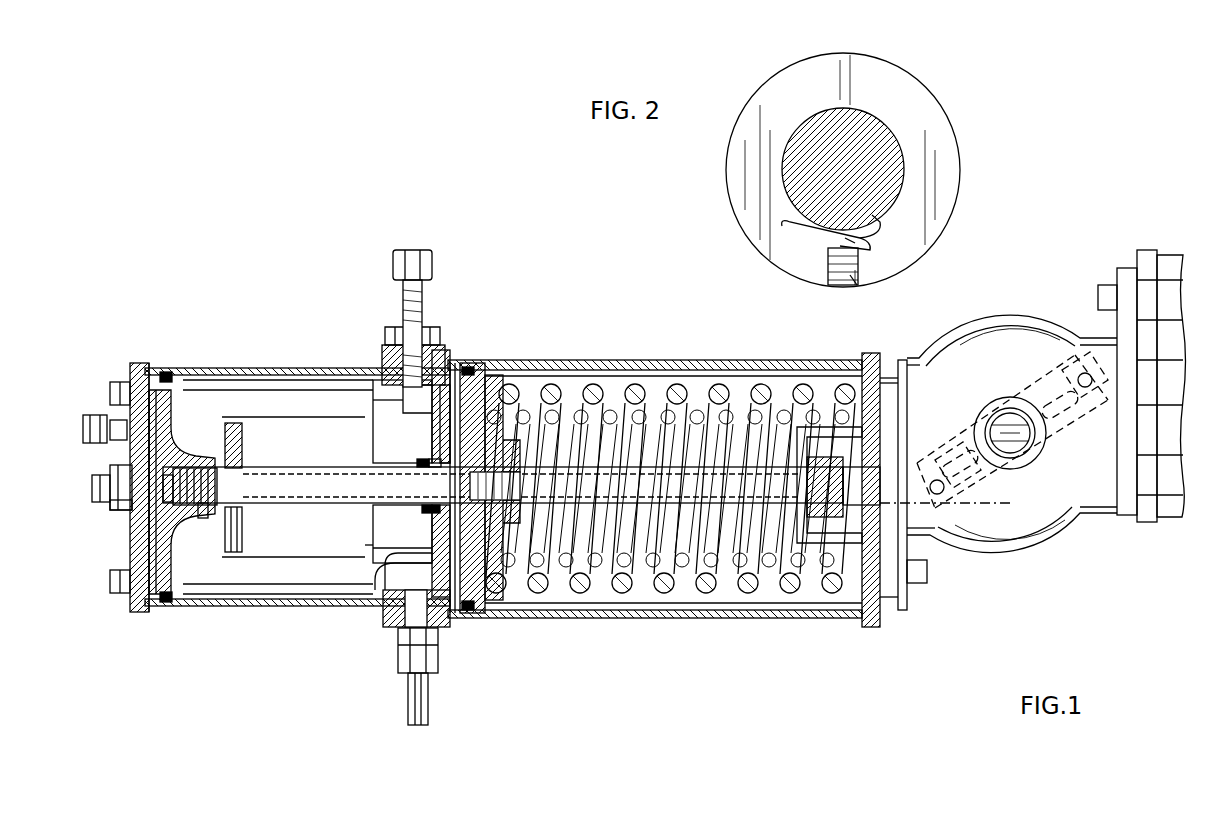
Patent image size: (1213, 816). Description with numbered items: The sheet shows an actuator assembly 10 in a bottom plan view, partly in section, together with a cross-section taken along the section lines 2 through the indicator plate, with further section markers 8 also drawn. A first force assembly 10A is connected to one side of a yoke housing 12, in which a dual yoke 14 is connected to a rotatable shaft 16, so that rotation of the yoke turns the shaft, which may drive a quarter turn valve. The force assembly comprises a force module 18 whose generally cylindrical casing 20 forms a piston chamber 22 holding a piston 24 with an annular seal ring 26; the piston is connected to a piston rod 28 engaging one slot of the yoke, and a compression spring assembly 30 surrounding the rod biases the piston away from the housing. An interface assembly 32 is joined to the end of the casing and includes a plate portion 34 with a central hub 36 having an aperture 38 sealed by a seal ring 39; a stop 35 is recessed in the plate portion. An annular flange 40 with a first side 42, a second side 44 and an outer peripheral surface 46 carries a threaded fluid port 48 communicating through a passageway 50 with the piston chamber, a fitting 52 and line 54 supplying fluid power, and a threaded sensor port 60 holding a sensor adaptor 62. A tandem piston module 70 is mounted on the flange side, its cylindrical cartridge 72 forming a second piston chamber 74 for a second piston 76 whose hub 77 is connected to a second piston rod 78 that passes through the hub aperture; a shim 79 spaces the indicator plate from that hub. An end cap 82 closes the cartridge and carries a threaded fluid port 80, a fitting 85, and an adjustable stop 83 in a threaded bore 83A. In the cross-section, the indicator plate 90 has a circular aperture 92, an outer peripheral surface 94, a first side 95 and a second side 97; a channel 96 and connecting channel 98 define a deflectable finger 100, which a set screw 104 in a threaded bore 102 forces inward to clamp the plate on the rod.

In FIG. 1, the actuator assembly 10 is at (430, 228).
In FIG. 1, the first force assembly 10A is at (557, 275).
In FIG. 1, the yoke housing 12 is at (1000, 553).
In FIG. 1, the dual yoke 14 is at (1050, 385).
In FIG. 1, the rotatable shaft 16 is at (1012, 440).
In FIG. 1, the force module 18 is at (670, 698).
In FIG. 1, the cylindrical casing 20 is at (690, 360).
In FIG. 1, the piston chamber 22 is at (470, 560).
In FIG. 1, the piston 24 is at (480, 400).
In FIG. 1, the annular seal ring 26 is at (468, 368).
In FIG. 1, the piston rod 28 is at (636, 482).
In FIG. 1, the compression spring assembly 30 is at (688, 598).
In FIG. 1, the interface assembly 32 is at (305, 750).
In FIG. 1, the plate portion 34 is at (415, 543).
In FIG. 1, the stop 35 is at (436, 435).
In FIG. 1, the hub 36 is at (420, 510).
In FIG. 1, the aperture 38 is at (415, 465).
In FIG. 1, the seal ring 39 is at (425, 460).
In FIG. 1, the annular flange 40 is at (392, 575).
In FIG. 1, the first side 42 is at (455, 627).
In FIG. 1, the second side 44 is at (388, 350).
In FIG. 1, the outer peripheral surface 46 is at (440, 632).
In FIG. 1, the threaded fluid port 48 is at (418, 602).
In FIG. 1, the passageway 50 is at (390, 590).
In FIG. 1, the fitting 52 is at (405, 648).
In FIG. 1, the line 54 is at (415, 728).
In FIG. 1, the threaded sensor port 60 is at (450, 392).
In FIG. 1, the sensor adaptor 62 is at (340, 250).
In FIG. 1, the tandem piston module 70 is at (220, 255).
In FIG. 1, the cylindrical cartridge 72 is at (296, 367).
In FIG. 1, the second piston chamber 74 is at (163, 568).
In FIG. 1, the second piston 76 is at (178, 560).
In FIG. 1, the hub 77 is at (213, 470).
In FIG. 1, the second piston rod 78 is at (245, 487).
In FIG. 2, the second piston rod 78 is at (815, 128).
In FIG. 1, the shim 79 is at (170, 600).
In FIG. 1, the threaded fluid port 80 is at (165, 372).
In FIG. 1, the end cap 82 is at (140, 600).
In FIG. 1, the adjustable stop 83 is at (145, 490).
In FIG. 1, the threaded bore 83A is at (108, 505).
In FIG. 1, the fitting 85 is at (88, 422).
In FIG. 1, the indicator plate 90 is at (222, 430).
In FIG. 2, the indicator plate 90 is at (908, 40).
In FIG. 2, the circular aperture 92 is at (890, 155).
In FIG. 2, the outer peripheral surface 94 is at (900, 262).
In FIG. 1, the first side 95 is at (244, 520).
In FIG. 2, the first side 95 is at (886, 105).
In FIG. 2, the channel 96 is at (803, 247).
In FIG. 1, the second side 97 is at (222, 512).
In FIG. 2, the connecting channel 98 is at (880, 238).
In FIG. 2, the deflectable finger 100 is at (840, 237).
In FIG. 2, the threaded bore 102 is at (838, 287).
In FIG. 2, the set screw 104 is at (857, 270).
In FIG. 1, the section line 2 is at (225, 412).
In FIG. 1, the section line 8 is at (440, 293).